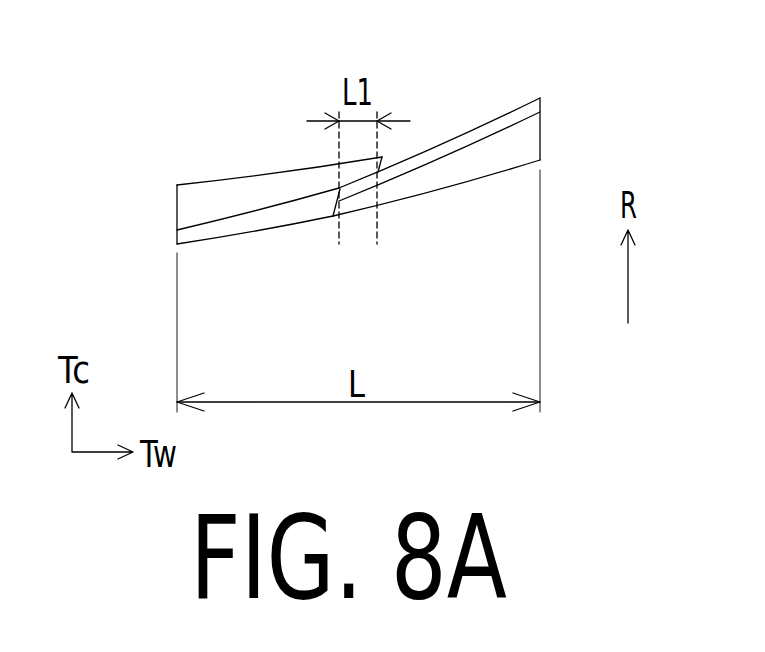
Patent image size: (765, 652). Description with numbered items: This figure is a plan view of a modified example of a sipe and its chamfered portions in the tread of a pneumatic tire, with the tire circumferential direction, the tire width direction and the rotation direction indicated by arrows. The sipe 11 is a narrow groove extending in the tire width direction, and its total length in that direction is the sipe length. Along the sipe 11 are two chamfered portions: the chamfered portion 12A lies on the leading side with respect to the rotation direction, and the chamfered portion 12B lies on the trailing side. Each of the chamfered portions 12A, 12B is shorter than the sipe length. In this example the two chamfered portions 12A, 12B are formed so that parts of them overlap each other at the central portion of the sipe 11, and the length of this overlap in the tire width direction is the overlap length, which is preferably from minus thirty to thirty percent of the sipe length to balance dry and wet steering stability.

The sipe 11 is at (358, 168).
The chamfered portion 12A is at (277, 188).
The chamfered portion 12B is at (430, 178).